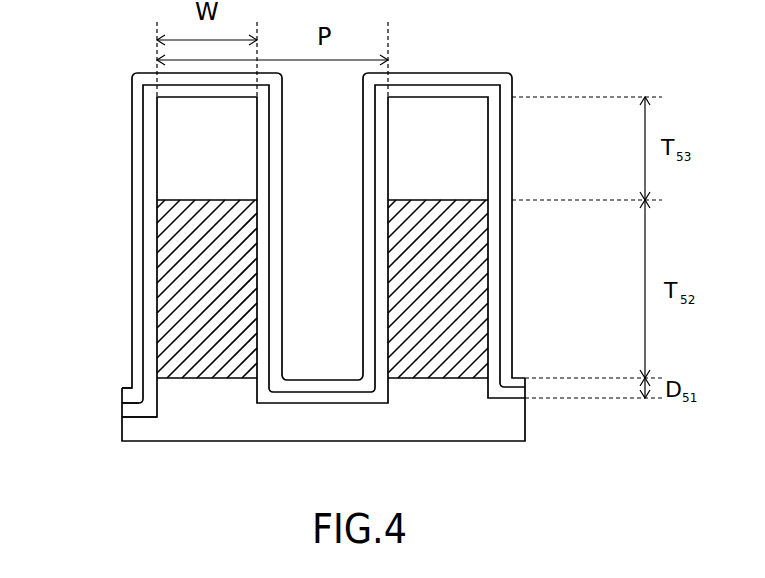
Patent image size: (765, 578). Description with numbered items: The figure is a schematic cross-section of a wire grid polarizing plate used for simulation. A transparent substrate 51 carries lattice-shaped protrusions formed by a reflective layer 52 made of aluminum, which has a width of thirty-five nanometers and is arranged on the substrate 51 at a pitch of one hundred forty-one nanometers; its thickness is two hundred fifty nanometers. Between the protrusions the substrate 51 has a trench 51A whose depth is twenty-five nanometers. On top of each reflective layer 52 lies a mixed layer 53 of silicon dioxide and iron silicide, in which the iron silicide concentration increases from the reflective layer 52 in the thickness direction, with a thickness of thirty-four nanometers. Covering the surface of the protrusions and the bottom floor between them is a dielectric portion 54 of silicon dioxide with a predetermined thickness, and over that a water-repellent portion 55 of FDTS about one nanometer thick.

The transparent substrate 51 is at (525, 420).
The trench 51A is at (137, 410).
The reflective layer 52 is at (488, 224).
The mixed layer 53 is at (488, 163).
The dielectric portion 54 is at (500, 128).
The water-repellent portion 55 is at (512, 78).